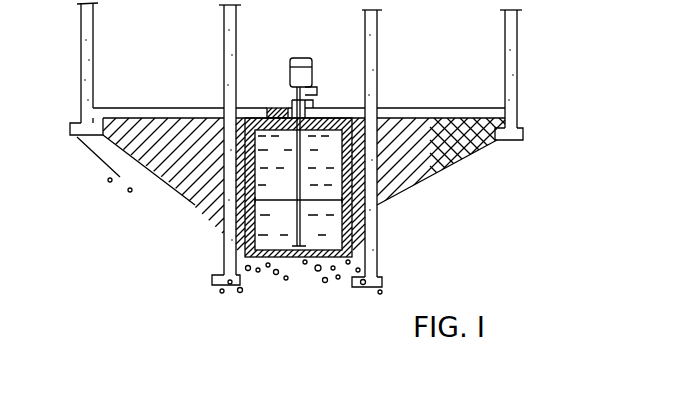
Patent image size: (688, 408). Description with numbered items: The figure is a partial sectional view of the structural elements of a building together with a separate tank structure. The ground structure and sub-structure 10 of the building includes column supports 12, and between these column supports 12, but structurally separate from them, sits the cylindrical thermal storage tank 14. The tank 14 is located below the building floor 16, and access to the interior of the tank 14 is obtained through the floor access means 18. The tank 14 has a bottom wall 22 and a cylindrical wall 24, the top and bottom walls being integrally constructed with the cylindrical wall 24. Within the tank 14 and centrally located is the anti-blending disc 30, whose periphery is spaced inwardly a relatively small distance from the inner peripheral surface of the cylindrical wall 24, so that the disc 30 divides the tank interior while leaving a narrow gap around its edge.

The ground structure and sub-structure 10 is at (393, 42).
The column supports 12 is at (223, 238).
The cylindrical thermal storage tank 14 is at (353, 147).
The building floor 16 is at (336, 108).
The floor access means 18 is at (267, 110).
The bottom wall 22 is at (298, 258).
The cylindrical wall 24 is at (342, 200).
The anti-blending disc 30 is at (327, 205).